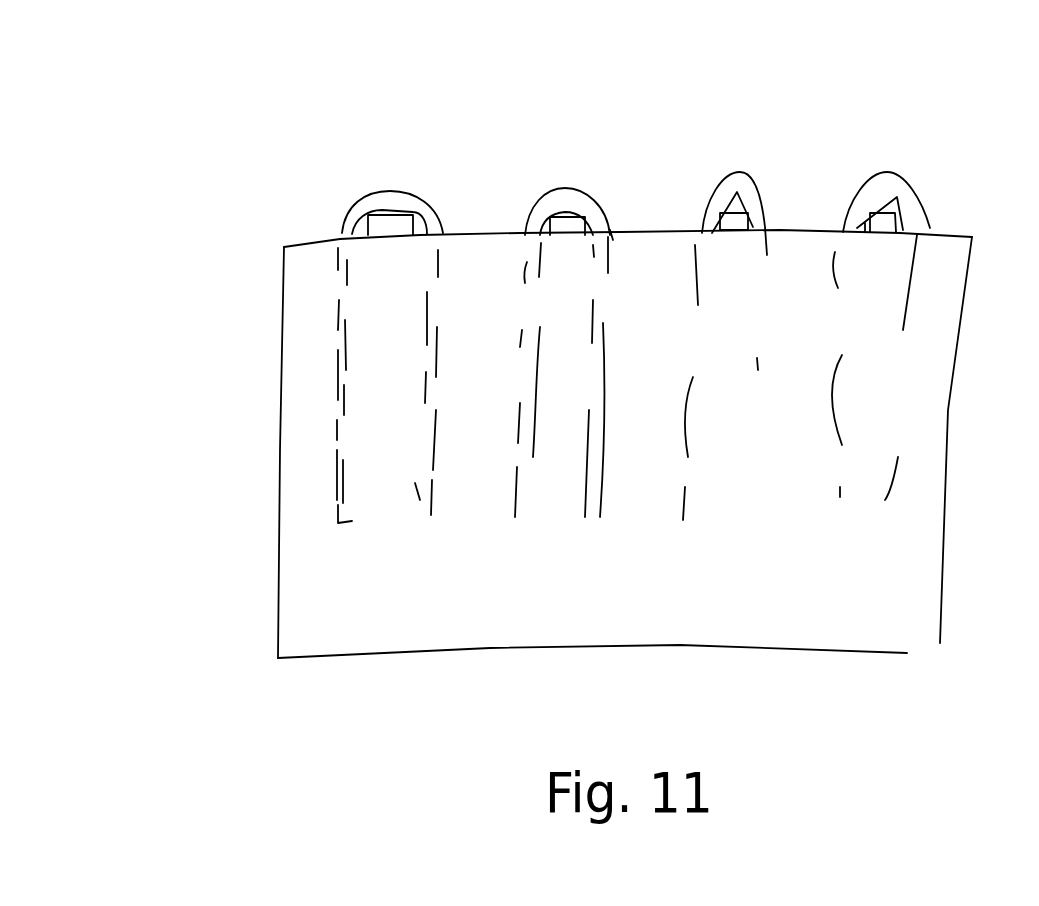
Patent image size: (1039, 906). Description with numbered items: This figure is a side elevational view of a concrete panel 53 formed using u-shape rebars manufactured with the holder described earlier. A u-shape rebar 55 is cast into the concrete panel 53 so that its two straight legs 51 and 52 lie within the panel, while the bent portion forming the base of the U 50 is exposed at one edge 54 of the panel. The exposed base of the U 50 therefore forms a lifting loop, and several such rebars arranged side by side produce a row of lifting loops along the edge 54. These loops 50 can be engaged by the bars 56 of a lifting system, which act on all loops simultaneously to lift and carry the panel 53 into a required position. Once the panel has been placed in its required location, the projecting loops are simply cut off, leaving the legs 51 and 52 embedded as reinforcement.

The base of the U 50 is at (403, 105).
The leg 51 is at (337, 388).
The leg 52 is at (427, 459).
The concrete panel 53 is at (643, 275).
The edge of the panel 54 is at (807, 232).
The u-shape rebar 55 is at (319, 203).
The bar of a lifting system 56 is at (400, 218).